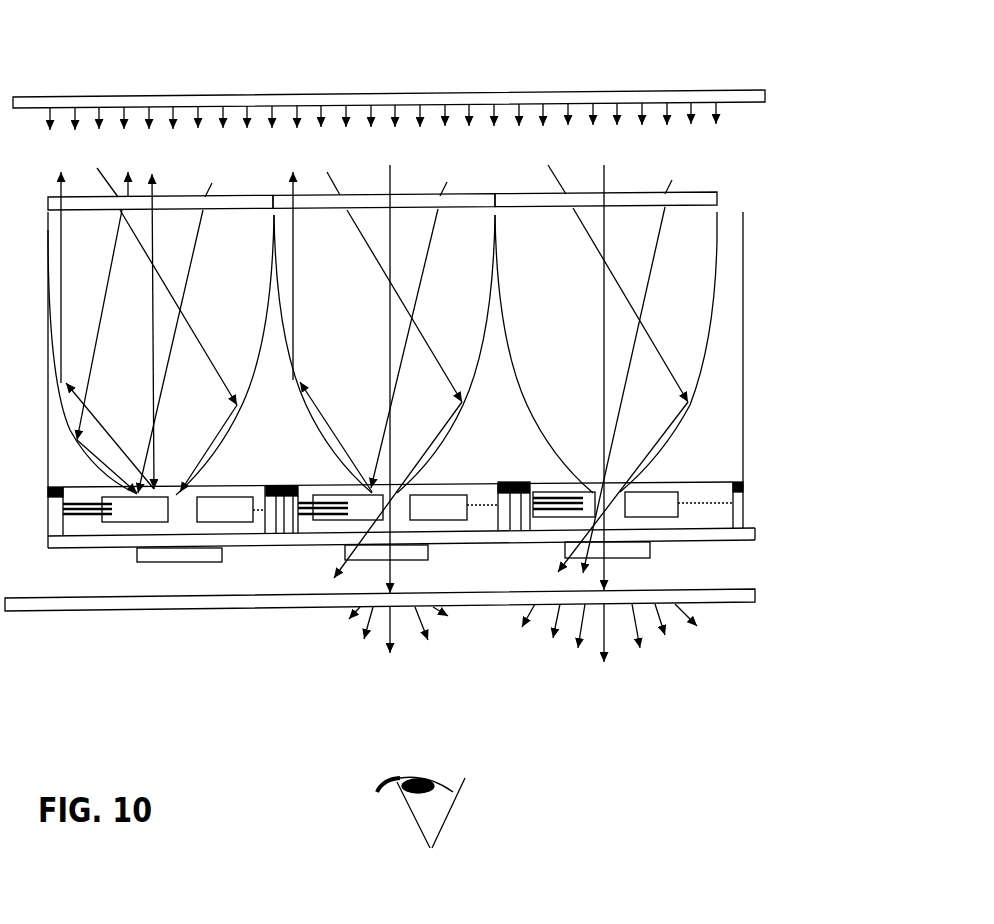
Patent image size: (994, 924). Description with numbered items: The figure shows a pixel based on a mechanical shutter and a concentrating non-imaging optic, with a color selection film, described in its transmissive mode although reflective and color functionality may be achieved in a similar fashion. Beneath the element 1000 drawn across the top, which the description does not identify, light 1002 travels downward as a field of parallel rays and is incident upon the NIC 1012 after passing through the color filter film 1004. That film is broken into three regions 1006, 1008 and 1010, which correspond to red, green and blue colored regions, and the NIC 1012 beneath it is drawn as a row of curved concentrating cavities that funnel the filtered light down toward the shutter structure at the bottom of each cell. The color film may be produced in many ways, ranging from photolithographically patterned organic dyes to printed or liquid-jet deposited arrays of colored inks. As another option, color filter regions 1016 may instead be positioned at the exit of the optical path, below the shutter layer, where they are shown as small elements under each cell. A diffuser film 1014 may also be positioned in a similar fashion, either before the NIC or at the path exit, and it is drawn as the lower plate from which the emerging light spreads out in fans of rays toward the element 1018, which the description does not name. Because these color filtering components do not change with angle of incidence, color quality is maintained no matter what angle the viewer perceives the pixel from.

The ambient light source / incident light plane 1000 is at (195, 95).
The light 1002 is at (728, 127).
The color filter film 1004 is at (440, 179).
The red colored region 1006 is at (640, 206).
The green colored region 1008 is at (421, 208).
The blue colored region 1010 is at (190, 210).
The NIC 1012 is at (730, 333).
The diffuser film 1014 is at (757, 587).
The color filter regions 1016 is at (563, 559).
The viewer eye 1018 is at (457, 807).